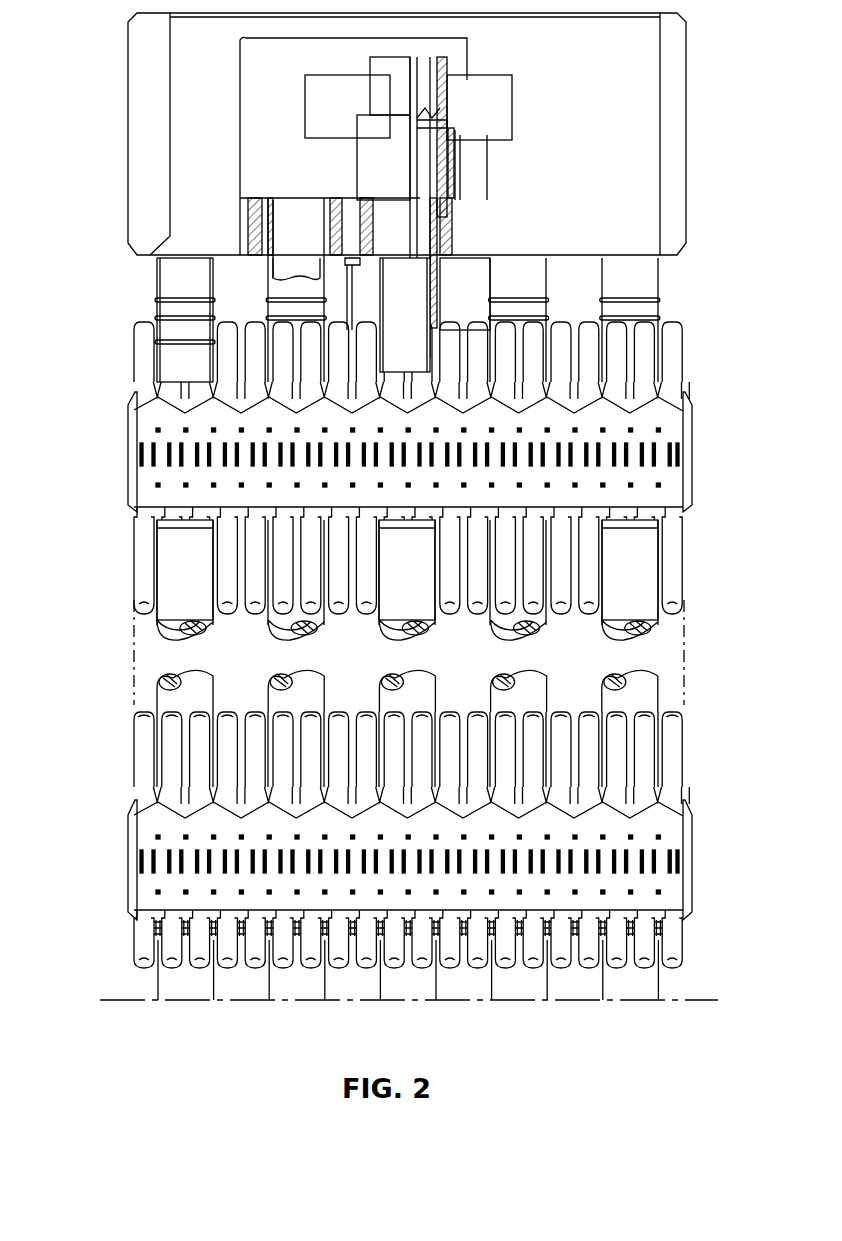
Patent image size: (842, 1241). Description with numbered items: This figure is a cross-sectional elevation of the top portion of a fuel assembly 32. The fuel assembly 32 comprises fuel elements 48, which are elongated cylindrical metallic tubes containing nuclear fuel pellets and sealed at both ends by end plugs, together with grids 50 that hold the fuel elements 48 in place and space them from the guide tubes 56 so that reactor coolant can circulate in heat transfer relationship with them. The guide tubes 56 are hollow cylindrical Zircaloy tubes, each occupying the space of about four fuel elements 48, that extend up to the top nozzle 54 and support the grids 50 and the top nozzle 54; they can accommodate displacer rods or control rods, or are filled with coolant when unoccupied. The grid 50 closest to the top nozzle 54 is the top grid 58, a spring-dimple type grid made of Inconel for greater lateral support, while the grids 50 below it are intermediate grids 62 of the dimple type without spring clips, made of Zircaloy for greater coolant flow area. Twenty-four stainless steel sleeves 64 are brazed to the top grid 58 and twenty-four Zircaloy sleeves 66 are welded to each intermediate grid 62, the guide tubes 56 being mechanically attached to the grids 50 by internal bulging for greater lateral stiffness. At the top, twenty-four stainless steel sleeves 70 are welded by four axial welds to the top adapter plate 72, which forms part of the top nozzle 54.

The fuel assembly 32 is at (108, 552).
The fuel element 48 is at (135, 357).
The grid 50 is at (660, 431).
The top nozzle 54 is at (678, 110).
The guide tube 56 is at (156, 291).
The top grid 58 is at (672, 487).
The intermediate grid 62 is at (662, 826).
The stainless steel sleeve 64 is at (160, 527).
The Zircaloy sleeve 66 is at (378, 932).
The stainless steel sleeve 70 is at (277, 291).
The top adapter plate 72 is at (260, 198).